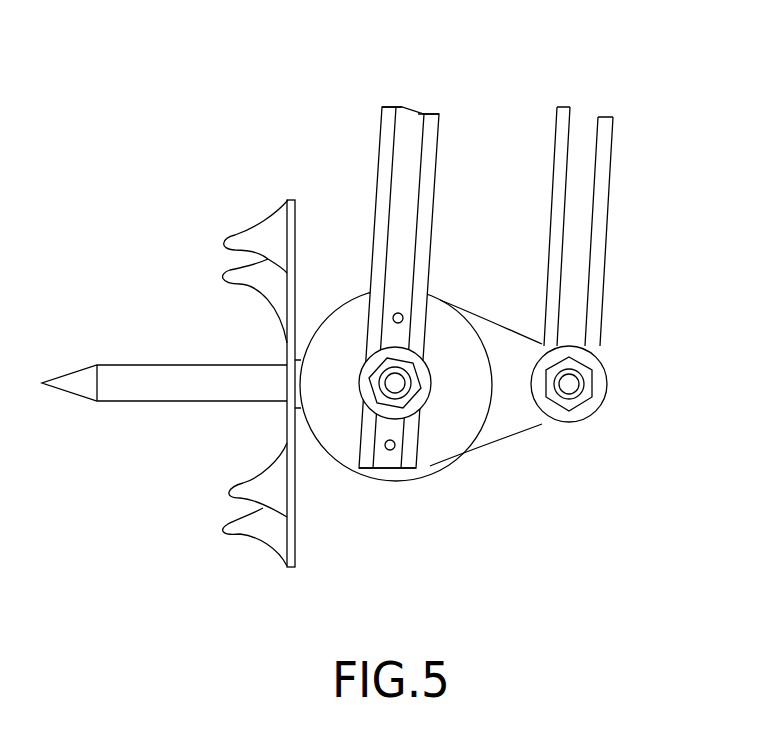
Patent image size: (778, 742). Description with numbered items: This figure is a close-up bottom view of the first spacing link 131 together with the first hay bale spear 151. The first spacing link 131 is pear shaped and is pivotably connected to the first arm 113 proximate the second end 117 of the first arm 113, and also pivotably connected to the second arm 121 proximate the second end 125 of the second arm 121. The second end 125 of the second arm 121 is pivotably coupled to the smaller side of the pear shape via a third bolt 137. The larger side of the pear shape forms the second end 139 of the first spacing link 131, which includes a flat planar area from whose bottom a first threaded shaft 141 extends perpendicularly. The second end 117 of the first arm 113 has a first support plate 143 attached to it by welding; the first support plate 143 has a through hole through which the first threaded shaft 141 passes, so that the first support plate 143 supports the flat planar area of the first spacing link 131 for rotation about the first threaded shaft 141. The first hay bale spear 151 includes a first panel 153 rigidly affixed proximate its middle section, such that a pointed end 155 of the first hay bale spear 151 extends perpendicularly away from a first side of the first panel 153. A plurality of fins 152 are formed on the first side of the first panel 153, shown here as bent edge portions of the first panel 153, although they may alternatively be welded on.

The first hay bale spear 151 is at (147, 206).
The first arm 113 is at (411, 122).
The second arm 121 is at (583, 135).
The second end of the first spacing link 139 is at (298, 387).
The first spacing link 131 is at (510, 350).
The first panel 153 is at (287, 345).
The first threaded shaft 141 is at (396, 384).
The third bolt 137 is at (570, 384).
The pointed end 155 is at (118, 383).
The plurality of fins 152 is at (237, 497).
The first support plate 143 is at (448, 444).
The second end of the first arm 117 is at (384, 466).
The second end of the second arm 125 is at (571, 424).